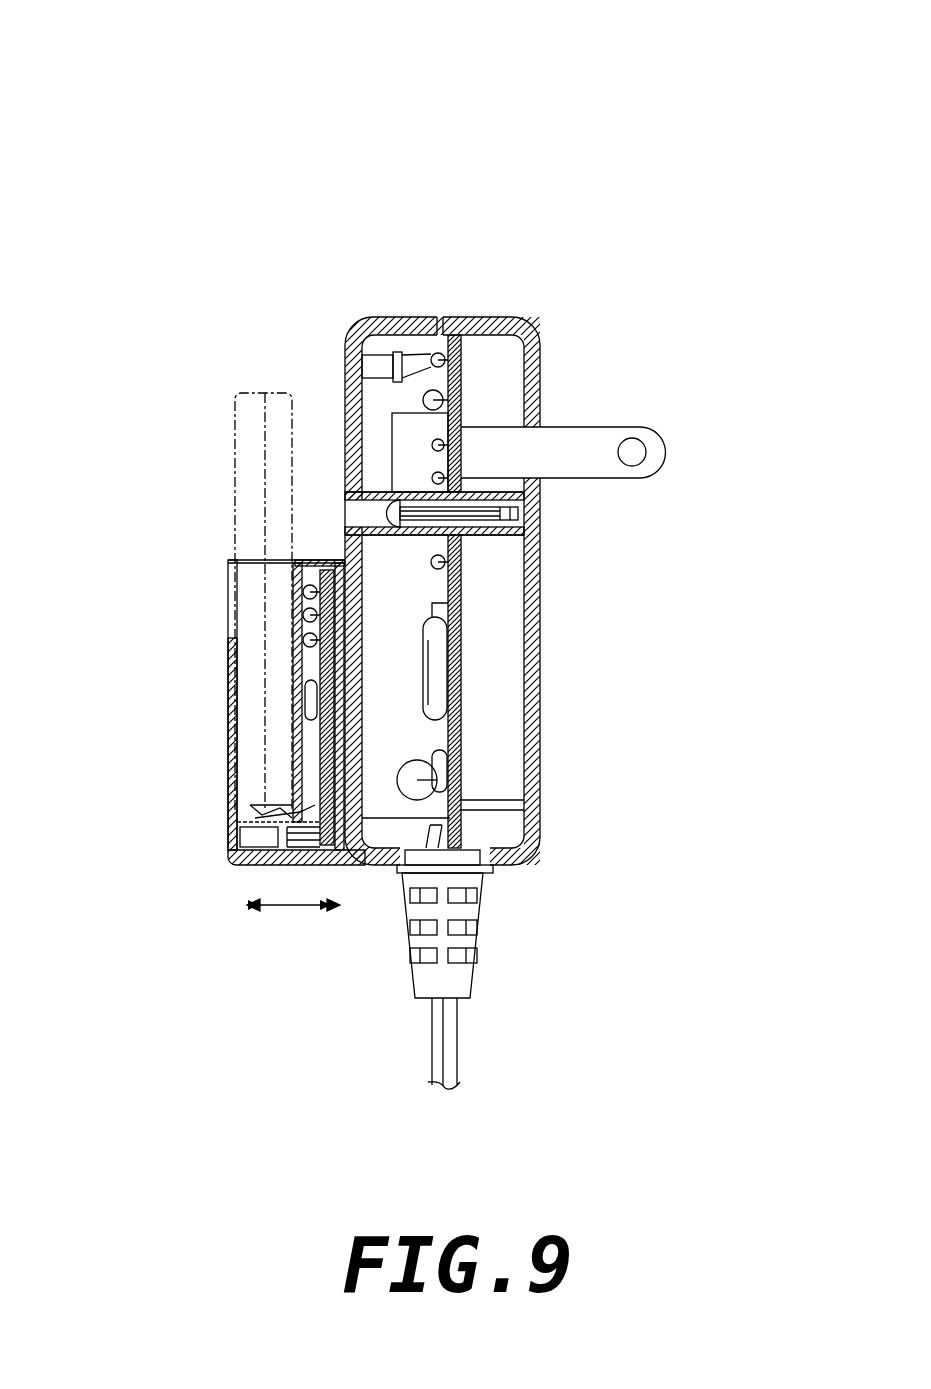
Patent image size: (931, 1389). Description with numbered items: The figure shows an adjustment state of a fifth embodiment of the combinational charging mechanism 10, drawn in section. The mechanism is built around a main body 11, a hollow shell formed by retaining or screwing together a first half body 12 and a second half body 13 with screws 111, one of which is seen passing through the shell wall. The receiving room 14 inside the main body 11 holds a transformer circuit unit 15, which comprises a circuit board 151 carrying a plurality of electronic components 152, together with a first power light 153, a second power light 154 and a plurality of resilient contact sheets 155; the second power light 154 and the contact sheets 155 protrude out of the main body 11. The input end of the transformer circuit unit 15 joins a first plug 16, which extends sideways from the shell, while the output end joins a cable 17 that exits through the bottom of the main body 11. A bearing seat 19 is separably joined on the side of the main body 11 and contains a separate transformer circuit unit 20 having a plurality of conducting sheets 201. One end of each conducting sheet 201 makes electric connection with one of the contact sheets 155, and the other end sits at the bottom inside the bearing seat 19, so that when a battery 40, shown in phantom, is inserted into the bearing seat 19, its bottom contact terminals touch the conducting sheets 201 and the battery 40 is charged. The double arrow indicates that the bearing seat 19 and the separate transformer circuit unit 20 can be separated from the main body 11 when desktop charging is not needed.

The combinational charging mechanism 10 is at (354, 138).
The main body 11 is at (436, 280).
The first half body 12 is at (390, 318).
The second half body 13 is at (483, 318).
The accommodation chamber 14 is at (498, 687).
The transformer circuit unit 15 is at (478, 732).
The first plug 16 is at (647, 452).
The cable 17 is at (447, 1038).
The bearing seat 19 is at (228, 675).
The separate transformer circuit unit 20 is at (308, 565).
The battery 40 is at (248, 437).
The screw 111 is at (520, 514).
The circuit board 151 is at (465, 578).
The electronic component 152 is at (425, 405).
The first power light 153 is at (372, 362).
The second power light 154 is at (240, 838).
The resilient contact sheet 155 is at (399, 818).
The conducting sheet 201 is at (242, 802).